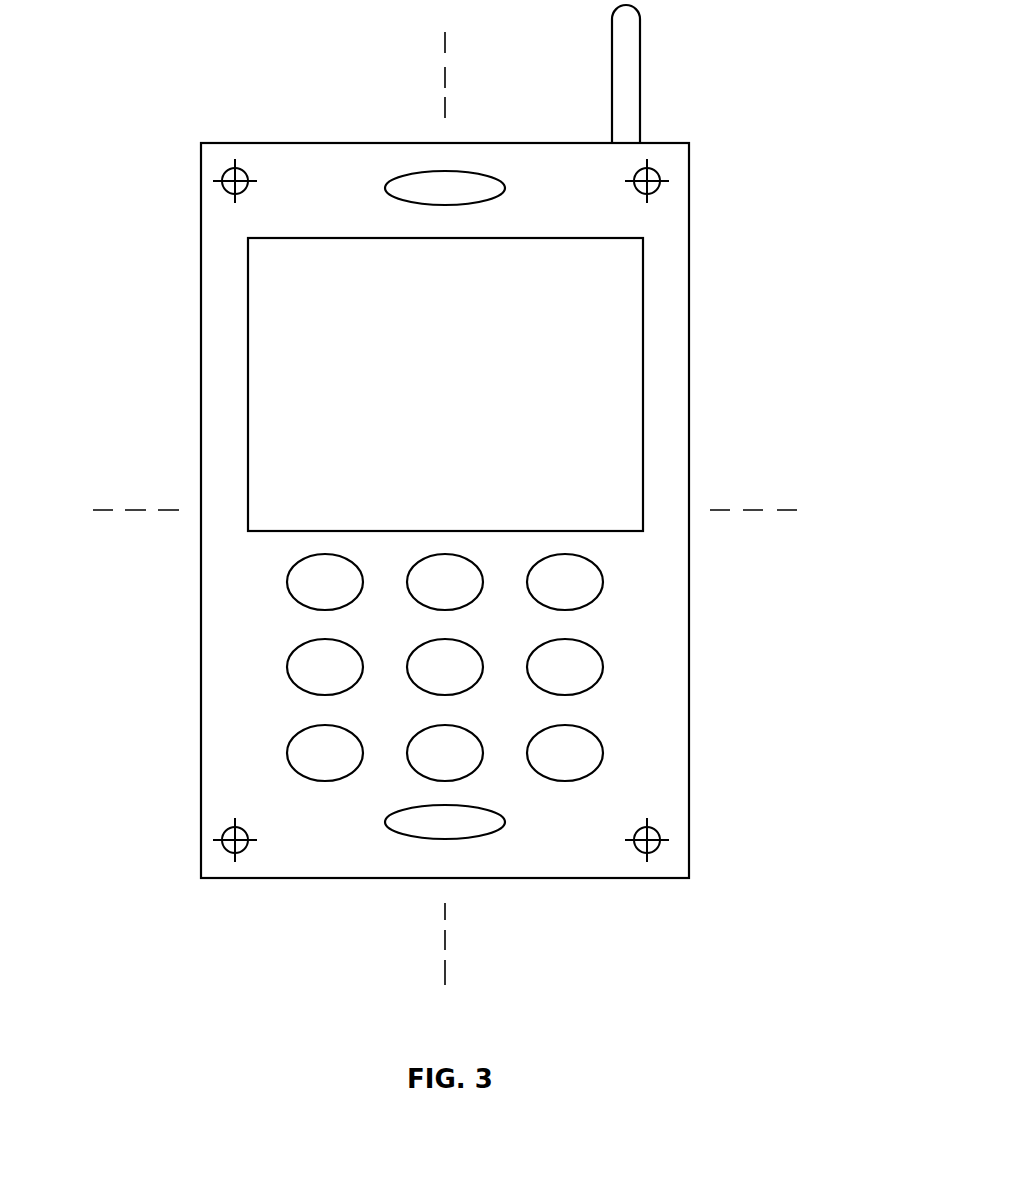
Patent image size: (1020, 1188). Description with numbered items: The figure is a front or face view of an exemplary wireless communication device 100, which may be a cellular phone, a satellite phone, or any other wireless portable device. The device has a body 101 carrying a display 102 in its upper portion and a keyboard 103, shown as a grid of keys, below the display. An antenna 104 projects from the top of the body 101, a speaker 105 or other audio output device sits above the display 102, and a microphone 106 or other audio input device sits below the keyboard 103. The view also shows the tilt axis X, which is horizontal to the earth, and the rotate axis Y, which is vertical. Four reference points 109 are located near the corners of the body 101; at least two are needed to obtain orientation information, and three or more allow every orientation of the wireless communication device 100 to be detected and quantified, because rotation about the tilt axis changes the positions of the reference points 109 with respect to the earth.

The wireless communication device 100 is at (309, 925).
The body 101 is at (689, 282).
The display 102 is at (245, 315).
The keyboard 103 is at (702, 557).
The antenna 104 is at (640, 72).
The speaker 105 is at (446, 170).
The microphone 106 is at (445, 840).
The reference points 109 is at (222, 170).